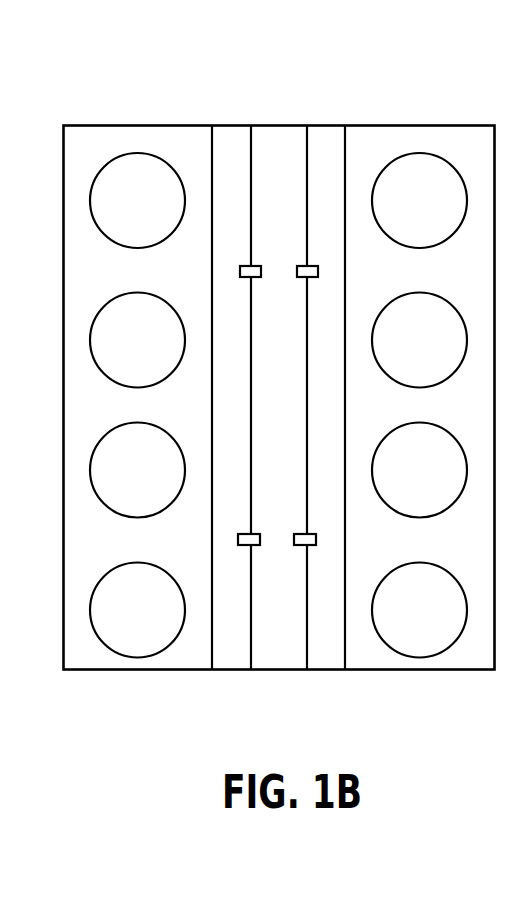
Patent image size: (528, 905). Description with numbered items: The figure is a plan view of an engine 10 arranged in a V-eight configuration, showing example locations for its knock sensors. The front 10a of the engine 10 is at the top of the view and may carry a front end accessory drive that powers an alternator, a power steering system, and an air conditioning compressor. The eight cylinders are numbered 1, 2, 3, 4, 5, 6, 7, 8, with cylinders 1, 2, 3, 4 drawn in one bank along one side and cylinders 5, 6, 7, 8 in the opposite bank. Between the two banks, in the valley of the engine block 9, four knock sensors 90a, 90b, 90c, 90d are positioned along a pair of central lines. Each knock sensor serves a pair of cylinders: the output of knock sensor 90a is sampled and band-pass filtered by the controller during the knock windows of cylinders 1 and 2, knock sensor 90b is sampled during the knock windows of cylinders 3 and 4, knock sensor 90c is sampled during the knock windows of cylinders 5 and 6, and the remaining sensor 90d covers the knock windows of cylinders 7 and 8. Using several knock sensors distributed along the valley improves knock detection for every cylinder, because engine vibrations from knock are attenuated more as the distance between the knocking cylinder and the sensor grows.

The engine 10 is at (100, 124).
The front of engine 10a is at (276, 100).
The engine block 9 is at (147, 690).
The knock sensor 90a is at (310, 271).
The knock sensor 90b is at (308, 540).
The knock sensor 90c is at (250, 270).
The knock sensor 90d is at (248, 540).
The cylinder 1 is at (419, 200).
The cylinder 2 is at (419, 340).
The cylinder 3 is at (419, 470).
The cylinder 4 is at (419, 610).
The cylinder 5 is at (137, 200).
The cylinder 6 is at (137, 340).
The cylinder 7 is at (137, 470).
The cylinder 8 is at (137, 610).